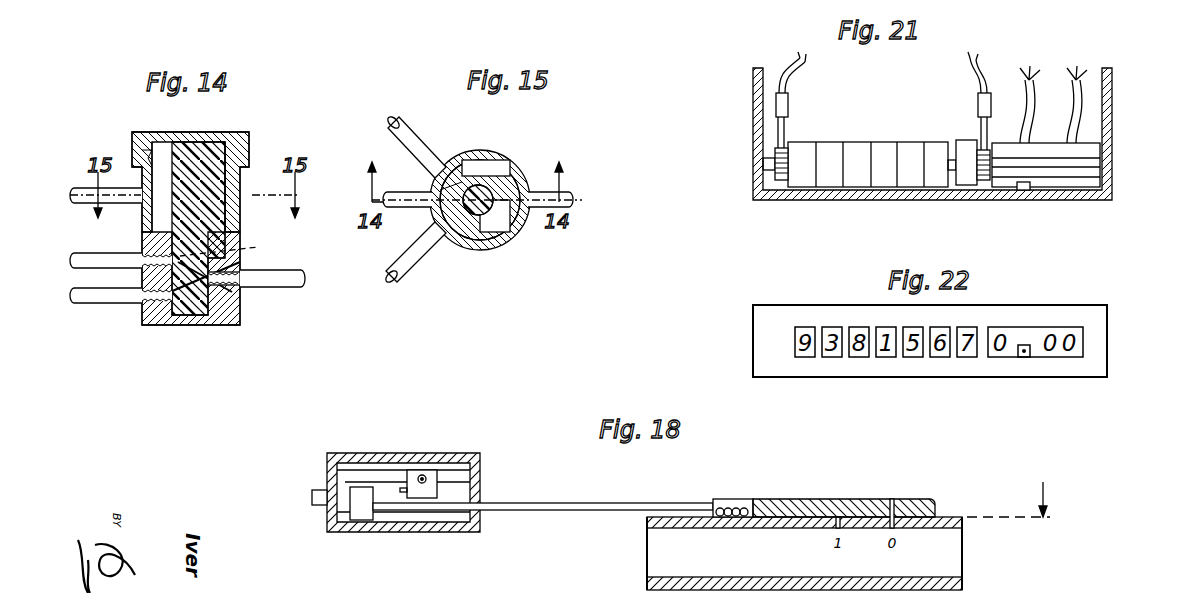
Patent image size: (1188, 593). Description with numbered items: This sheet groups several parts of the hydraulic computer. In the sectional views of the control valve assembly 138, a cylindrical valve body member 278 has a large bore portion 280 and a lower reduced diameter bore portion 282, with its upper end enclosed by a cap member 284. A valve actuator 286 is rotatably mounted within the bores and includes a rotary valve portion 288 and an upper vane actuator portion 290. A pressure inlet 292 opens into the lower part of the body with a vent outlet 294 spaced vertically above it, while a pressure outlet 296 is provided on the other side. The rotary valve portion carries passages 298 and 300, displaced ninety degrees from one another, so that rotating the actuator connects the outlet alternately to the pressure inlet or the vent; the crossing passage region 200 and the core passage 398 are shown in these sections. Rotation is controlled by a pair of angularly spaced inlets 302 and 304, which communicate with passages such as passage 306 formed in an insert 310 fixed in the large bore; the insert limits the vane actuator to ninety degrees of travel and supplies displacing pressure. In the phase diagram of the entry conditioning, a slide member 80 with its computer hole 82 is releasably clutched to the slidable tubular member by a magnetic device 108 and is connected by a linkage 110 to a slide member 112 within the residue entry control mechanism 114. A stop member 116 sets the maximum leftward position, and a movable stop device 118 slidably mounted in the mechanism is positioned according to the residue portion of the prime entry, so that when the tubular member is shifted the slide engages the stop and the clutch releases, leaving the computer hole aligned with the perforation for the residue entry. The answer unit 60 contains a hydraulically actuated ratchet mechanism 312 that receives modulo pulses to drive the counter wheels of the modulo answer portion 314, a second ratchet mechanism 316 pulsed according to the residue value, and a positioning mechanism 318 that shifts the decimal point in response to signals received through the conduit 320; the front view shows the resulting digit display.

In FIG. 14, the control valve assembly 138 is at (243, 321).
In FIG. 14, the passage 200 is at (236, 242).
In FIG. 14, the cylindrical valve body member 278 is at (236, 266).
In FIG. 15, the cylindrical valve body member 278 is at (516, 224).
In FIG. 14, the large bore portion 280 is at (243, 172).
In FIG. 14, the reduced diameter bore portion 282 is at (210, 306).
In FIG. 14, the cap member 284 is at (215, 132).
In FIG. 14, the valve actuator 286 is at (190, 160).
In FIG. 14, the rotary valve portion 288 is at (204, 312).
In FIG. 14, the vane actuator portion 290 is at (233, 160).
In FIG. 15, the vane actuator portion 290 is at (512, 176).
In FIG. 14, the pressure inlet 292 is at (132, 300).
In FIG. 14, the vent outlet 294 is at (140, 257).
In FIG. 15, the vent outlet 294 is at (421, 209).
In FIG. 14, the pressure outlet 296 is at (258, 286).
In FIG. 15, the pressure outlet 296 is at (541, 195).
In FIG. 14, the passage 298 is at (184, 316).
In FIG. 15, the passage 300 is at (456, 190).
In FIG. 14, the inlet 302 is at (134, 204).
In FIG. 15, the inlet 302 is at (448, 160).
In FIG. 15, the inlet 304 is at (441, 232).
In FIG. 15, the passage 306 is at (495, 180).
In FIG. 14, the insert 310 is at (150, 158).
In FIG. 15, the core passage 398 is at (478, 236).
In FIG. 21, the answer unit 60 is at (1112, 108).
In FIG. 21, the hydraulically actuated ratchet mechanism 312 is at (795, 132).
In FIG. 21, the modulo answer portion 314 is at (883, 136).
In FIG. 21, the ratchet mechanism 316 is at (980, 137).
In FIG. 21, the positioning mechanism 318 is at (1084, 150).
In FIG. 21, the conduit 320 is at (1072, 95).
In FIG. 18, the slide member 80 is at (831, 505).
In FIG. 18, the computer hole 82 is at (896, 499).
In FIG. 18, the magnetic device 108 is at (737, 510).
In FIG. 18, the linkage 110 is at (548, 500).
In FIG. 18, the slide member 112 is at (362, 512).
In FIG. 18, the residue entry control mechanism 114 is at (452, 448).
In FIG. 18, the stop member 116 is at (340, 488).
In FIG. 18, the movable stop device 118 is at (421, 472).